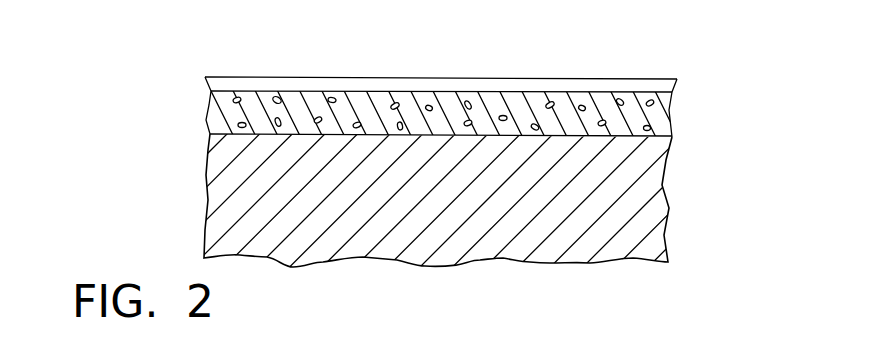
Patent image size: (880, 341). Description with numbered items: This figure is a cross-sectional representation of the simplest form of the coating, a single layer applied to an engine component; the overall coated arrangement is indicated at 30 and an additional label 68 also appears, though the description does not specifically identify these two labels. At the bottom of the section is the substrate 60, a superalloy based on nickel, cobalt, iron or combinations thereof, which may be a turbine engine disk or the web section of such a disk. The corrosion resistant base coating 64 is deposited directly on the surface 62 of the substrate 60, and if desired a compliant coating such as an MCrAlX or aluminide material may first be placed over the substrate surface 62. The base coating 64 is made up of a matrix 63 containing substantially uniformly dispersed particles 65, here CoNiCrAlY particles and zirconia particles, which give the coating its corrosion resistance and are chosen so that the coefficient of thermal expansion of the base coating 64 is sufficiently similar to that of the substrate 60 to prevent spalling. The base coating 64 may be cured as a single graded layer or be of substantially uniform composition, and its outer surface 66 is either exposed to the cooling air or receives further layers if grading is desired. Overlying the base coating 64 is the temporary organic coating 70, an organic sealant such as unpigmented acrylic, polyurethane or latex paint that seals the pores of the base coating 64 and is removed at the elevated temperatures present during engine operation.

The coated article 30 is at (439, 176).
The substrate 60 is at (667, 212).
The substrate surface 62 is at (645, 134).
The matrix 63 is at (207, 128).
The corrosion resistant base coating 64 is at (266, 107).
The dispersed particles 65 is at (277, 96).
The outer surface of base coating 66 is at (596, 91).
The top surface of overlay 68 is at (677, 80).
The temporary organic coating 70 is at (654, 85).